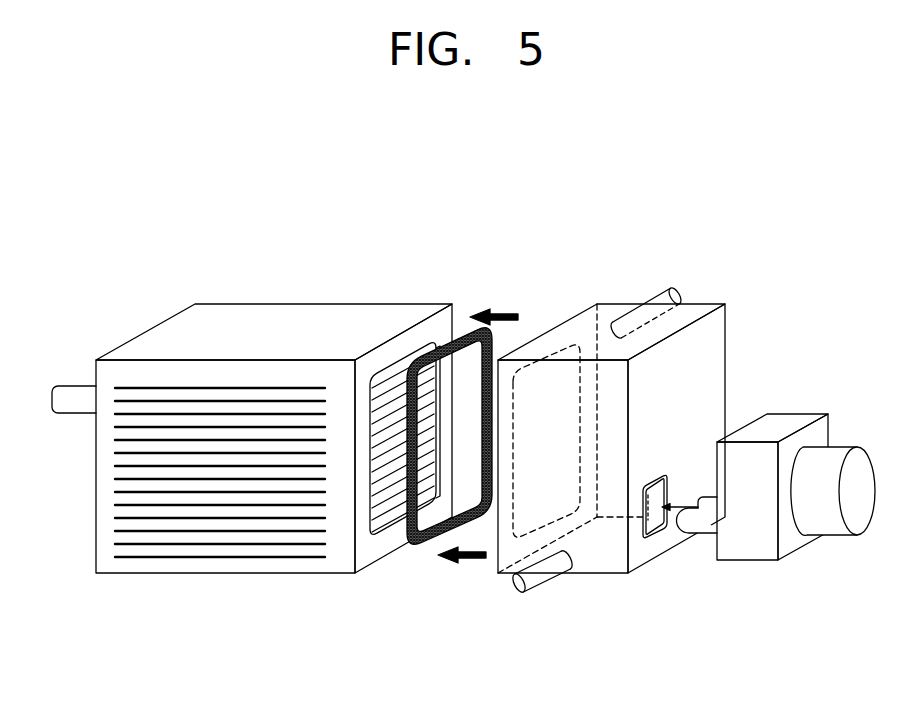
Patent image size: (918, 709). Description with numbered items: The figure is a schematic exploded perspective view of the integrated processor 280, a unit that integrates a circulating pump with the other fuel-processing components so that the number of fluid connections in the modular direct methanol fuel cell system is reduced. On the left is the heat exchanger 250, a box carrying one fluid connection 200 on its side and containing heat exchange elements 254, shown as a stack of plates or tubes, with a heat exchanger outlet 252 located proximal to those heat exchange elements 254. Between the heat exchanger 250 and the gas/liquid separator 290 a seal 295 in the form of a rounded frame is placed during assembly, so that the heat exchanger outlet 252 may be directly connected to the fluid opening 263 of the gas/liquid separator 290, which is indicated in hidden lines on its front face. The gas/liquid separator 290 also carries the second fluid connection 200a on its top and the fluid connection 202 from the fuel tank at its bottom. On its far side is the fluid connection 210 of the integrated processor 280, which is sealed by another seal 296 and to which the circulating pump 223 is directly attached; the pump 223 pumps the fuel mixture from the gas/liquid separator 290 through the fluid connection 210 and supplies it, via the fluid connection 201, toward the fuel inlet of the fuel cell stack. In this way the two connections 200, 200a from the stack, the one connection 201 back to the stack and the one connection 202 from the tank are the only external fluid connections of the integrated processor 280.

The fluid connection 200 is at (78, 397).
The fluid connection 200a is at (668, 292).
The fluid connection 201 is at (700, 533).
The fluid connection 202 is at (538, 578).
The fluid connection 210 is at (652, 540).
The circulating pump 223 is at (755, 560).
The heat exchanger 250 is at (336, 565).
The heat exchanger outlet 252 is at (405, 352).
The heat exchange elements 254 is at (398, 458).
The fluid opening 263 is at (569, 340).
The integrated processor 280 is at (683, 405).
The gas/liquid separator 290 is at (704, 300).
The seal 295 is at (420, 548).
The seal 296 is at (637, 571).